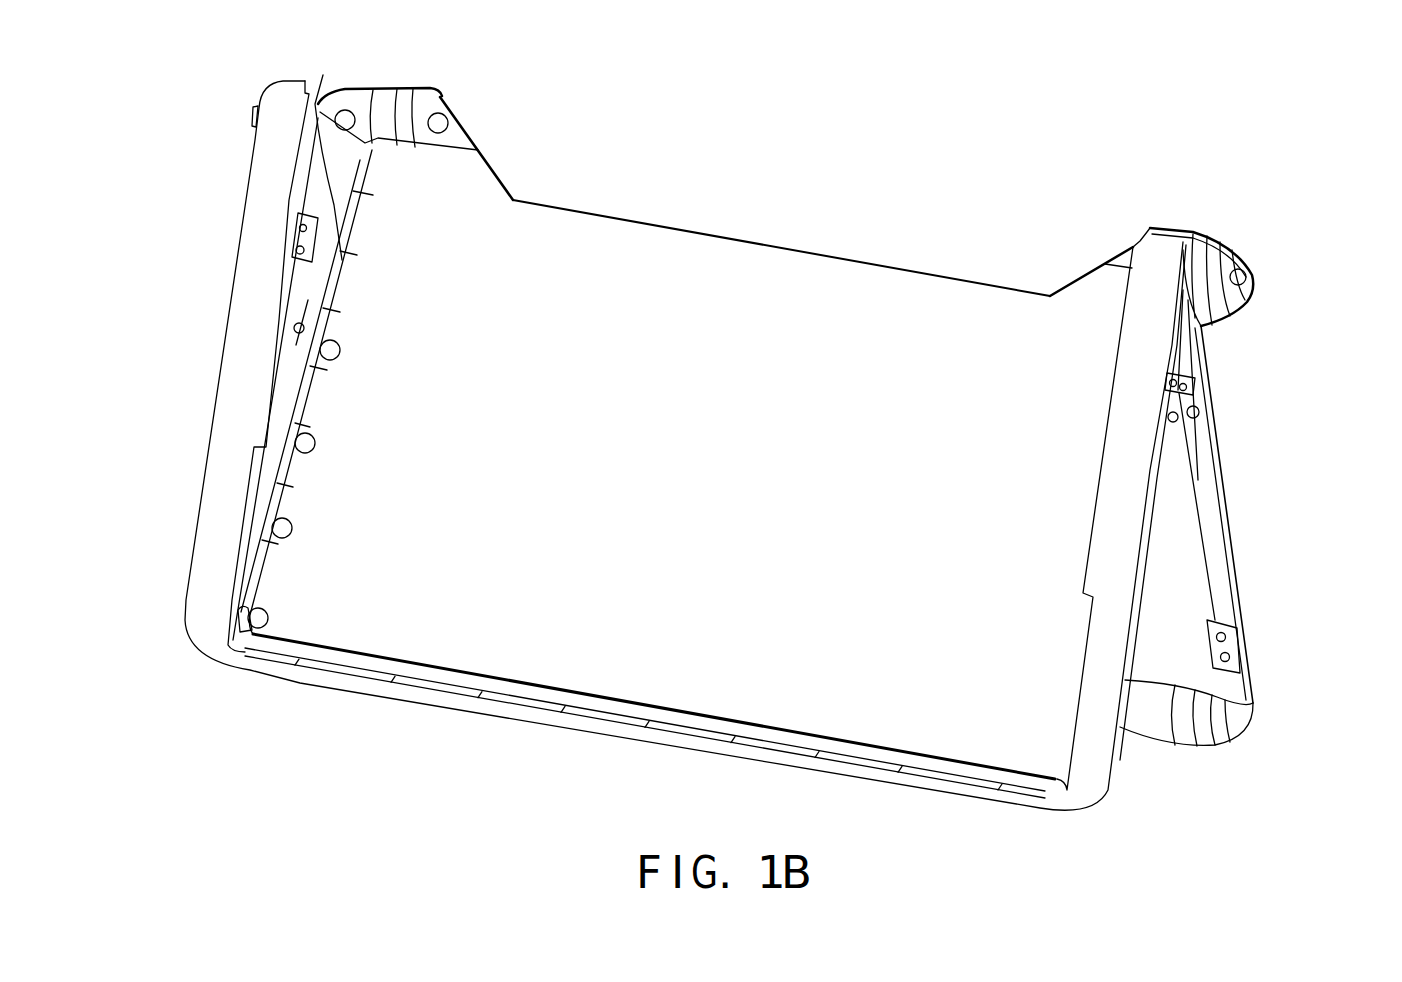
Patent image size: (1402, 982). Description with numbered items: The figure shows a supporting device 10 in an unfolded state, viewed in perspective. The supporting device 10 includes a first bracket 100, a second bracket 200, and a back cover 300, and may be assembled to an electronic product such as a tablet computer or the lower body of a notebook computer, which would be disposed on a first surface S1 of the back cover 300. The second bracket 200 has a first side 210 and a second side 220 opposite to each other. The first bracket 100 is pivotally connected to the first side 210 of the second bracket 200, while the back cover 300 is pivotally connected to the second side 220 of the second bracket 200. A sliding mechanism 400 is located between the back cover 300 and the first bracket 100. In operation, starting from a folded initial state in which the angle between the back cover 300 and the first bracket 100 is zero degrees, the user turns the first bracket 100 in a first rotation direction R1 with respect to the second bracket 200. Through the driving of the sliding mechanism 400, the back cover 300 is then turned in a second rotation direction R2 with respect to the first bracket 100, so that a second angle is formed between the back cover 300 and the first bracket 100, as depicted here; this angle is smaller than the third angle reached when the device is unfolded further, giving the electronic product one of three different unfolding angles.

The supporting device 10 is at (1368, 846).
The first bracket 100 is at (1228, 525).
The second bracket 200 is at (1090, 772).
The first side 210 is at (230, 76).
The second side 220 is at (1065, 840).
The back cover 300 is at (800, 287).
The sliding mechanism 400 is at (1170, 510).
The first surface S1 is at (624, 249).
The first rotation direction R1 is at (1273, 690).
The second rotation direction R2 is at (1217, 212).